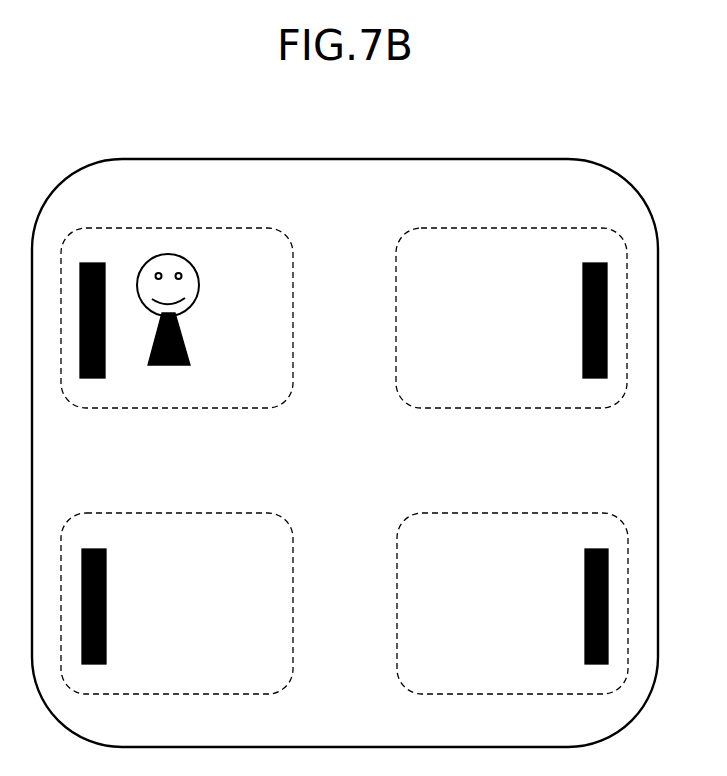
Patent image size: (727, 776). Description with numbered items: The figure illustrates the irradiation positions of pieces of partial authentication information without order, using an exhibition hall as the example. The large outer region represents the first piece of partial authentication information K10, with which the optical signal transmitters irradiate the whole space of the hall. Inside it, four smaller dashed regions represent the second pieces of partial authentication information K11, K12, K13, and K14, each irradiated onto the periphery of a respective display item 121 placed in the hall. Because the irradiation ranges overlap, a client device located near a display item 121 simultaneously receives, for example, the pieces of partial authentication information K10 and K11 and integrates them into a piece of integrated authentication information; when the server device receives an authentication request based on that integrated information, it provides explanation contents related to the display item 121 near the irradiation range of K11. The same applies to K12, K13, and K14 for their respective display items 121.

The first piece of partial authentication information K10 is at (332, 158).
The second piece of partial authentication information K11 is at (117, 227).
The second piece of partial authentication information K12 is at (452, 227).
The second piece of partial authentication information K13 is at (117, 512).
The second piece of partial authentication information K14 is at (453, 512).
The display item 121 is at (95, 378).